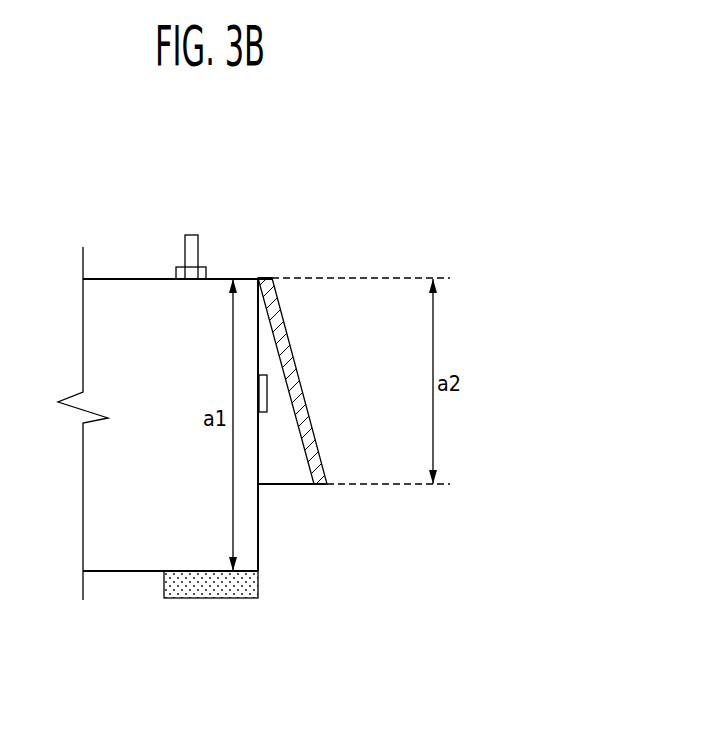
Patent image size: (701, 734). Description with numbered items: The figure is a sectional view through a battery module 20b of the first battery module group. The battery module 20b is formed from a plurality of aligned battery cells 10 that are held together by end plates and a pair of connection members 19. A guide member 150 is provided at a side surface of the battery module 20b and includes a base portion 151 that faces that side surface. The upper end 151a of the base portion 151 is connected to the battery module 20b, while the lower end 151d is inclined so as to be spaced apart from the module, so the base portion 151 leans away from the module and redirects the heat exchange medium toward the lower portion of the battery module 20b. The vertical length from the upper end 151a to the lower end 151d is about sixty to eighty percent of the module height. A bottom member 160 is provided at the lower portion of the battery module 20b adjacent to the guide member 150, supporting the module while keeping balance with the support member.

The battery module 20b is at (254, 193).
The battery cell 10 is at (113, 550).
The bottom member 160 is at (207, 590).
The guide member 150 is at (297, 389).
The base portion 151 is at (298, 403).
The upper end of the base portion 151a is at (263, 275).
The lower end of the base portion 151d is at (318, 485).
The connection member 19 is at (264, 380).